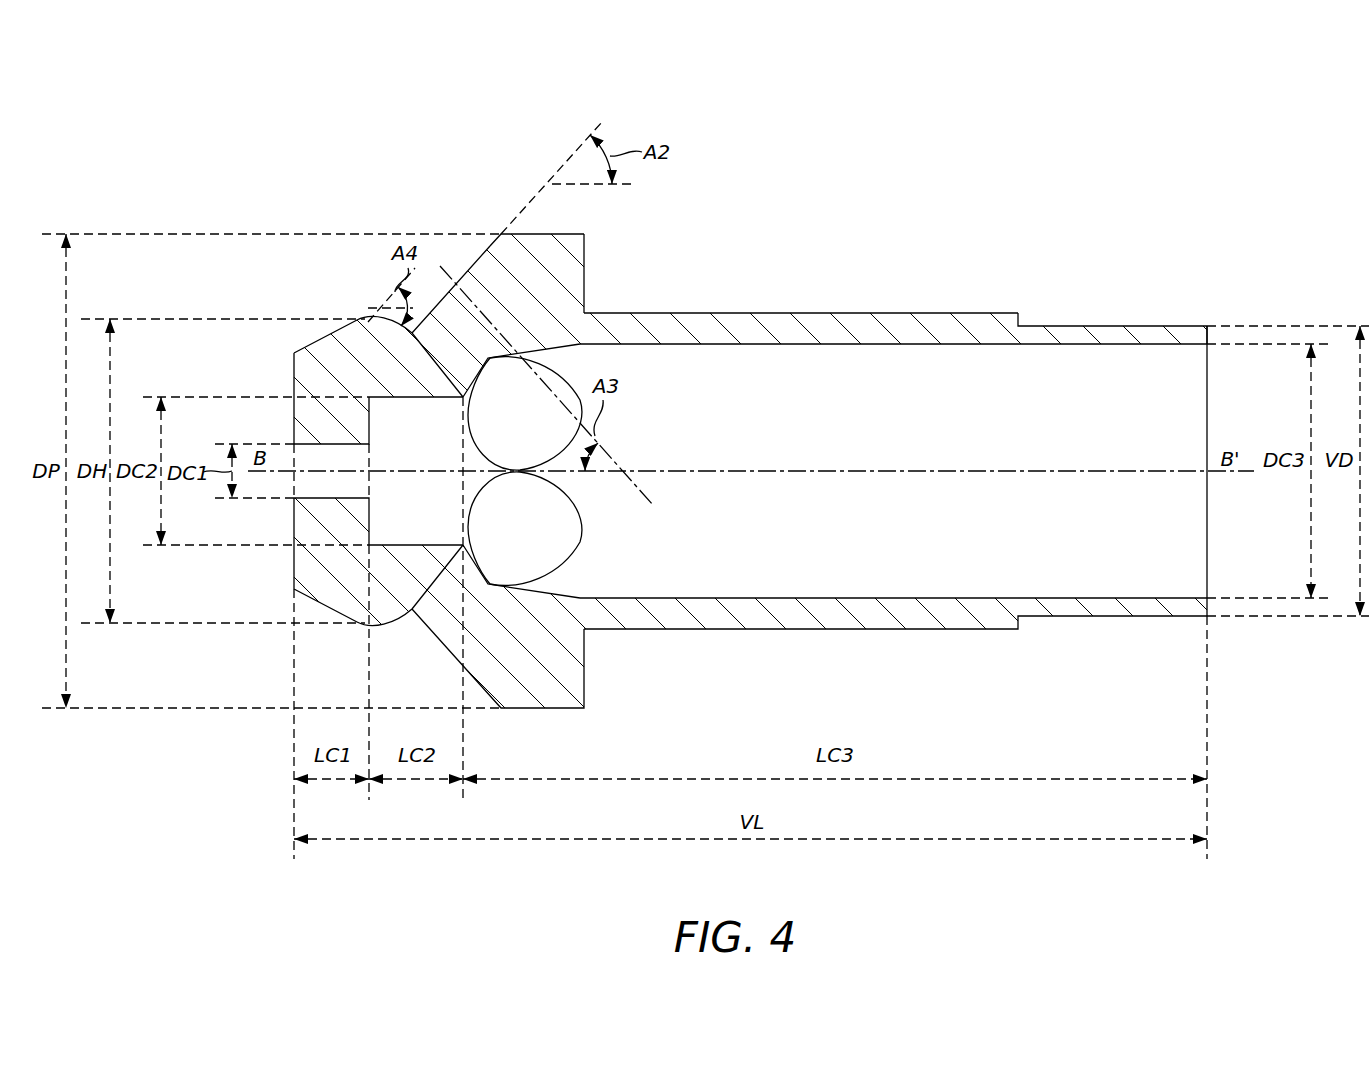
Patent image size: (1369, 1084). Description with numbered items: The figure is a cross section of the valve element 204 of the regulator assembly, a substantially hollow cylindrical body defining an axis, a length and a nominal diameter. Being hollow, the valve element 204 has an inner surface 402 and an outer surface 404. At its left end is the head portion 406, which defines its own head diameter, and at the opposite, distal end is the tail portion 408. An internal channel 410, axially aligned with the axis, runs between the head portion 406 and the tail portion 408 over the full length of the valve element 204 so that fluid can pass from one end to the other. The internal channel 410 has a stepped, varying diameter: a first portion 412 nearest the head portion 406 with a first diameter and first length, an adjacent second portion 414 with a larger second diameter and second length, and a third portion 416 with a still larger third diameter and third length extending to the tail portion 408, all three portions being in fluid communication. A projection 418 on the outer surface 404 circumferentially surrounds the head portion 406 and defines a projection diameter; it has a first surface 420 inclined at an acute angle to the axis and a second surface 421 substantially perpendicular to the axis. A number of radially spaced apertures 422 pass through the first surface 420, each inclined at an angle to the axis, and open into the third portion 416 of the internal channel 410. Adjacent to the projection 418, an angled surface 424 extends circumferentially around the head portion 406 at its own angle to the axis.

The valve element 204 is at (1142, 138).
The inner surface 402 is at (1155, 347).
The outer surface 404 is at (895, 312).
The head portion 406 is at (304, 333).
The tail portion 408 is at (1212, 306).
The internal channel 410 is at (925, 560).
The first portion 412 is at (316, 457).
The second portion 414 is at (413, 512).
The third portion 416 is at (1053, 560).
The projection 418 is at (561, 234).
The first surface 420 is at (468, 271).
The second surface 421 is at (587, 262).
The apertures 422 is at (503, 313).
The angled surface 424 is at (330, 334).